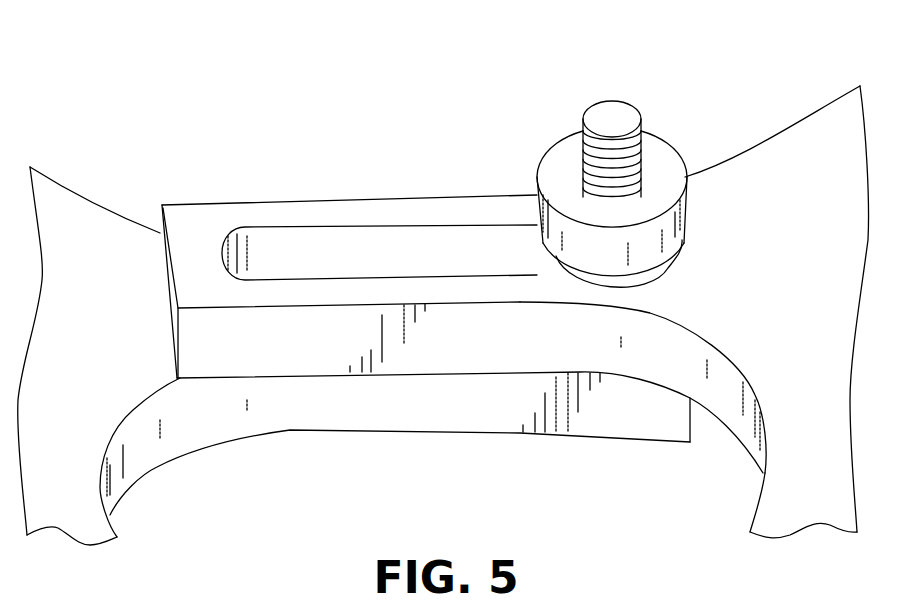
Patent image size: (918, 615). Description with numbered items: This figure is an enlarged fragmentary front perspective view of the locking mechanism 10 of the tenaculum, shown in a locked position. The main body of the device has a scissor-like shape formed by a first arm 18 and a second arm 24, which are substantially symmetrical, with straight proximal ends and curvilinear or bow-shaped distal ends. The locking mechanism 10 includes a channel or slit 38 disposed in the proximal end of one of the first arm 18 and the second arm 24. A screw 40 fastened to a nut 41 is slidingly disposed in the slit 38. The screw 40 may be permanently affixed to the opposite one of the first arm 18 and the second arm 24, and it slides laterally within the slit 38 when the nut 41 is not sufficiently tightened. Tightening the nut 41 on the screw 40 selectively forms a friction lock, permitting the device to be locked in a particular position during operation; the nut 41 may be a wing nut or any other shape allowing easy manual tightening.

The locking mechanism 10 is at (364, 163).
The first arm 18 is at (100, 250).
The second arm 24 is at (793, 197).
The slit 38 is at (430, 245).
The screw 40 is at (610, 120).
The nut 41 is at (560, 163).